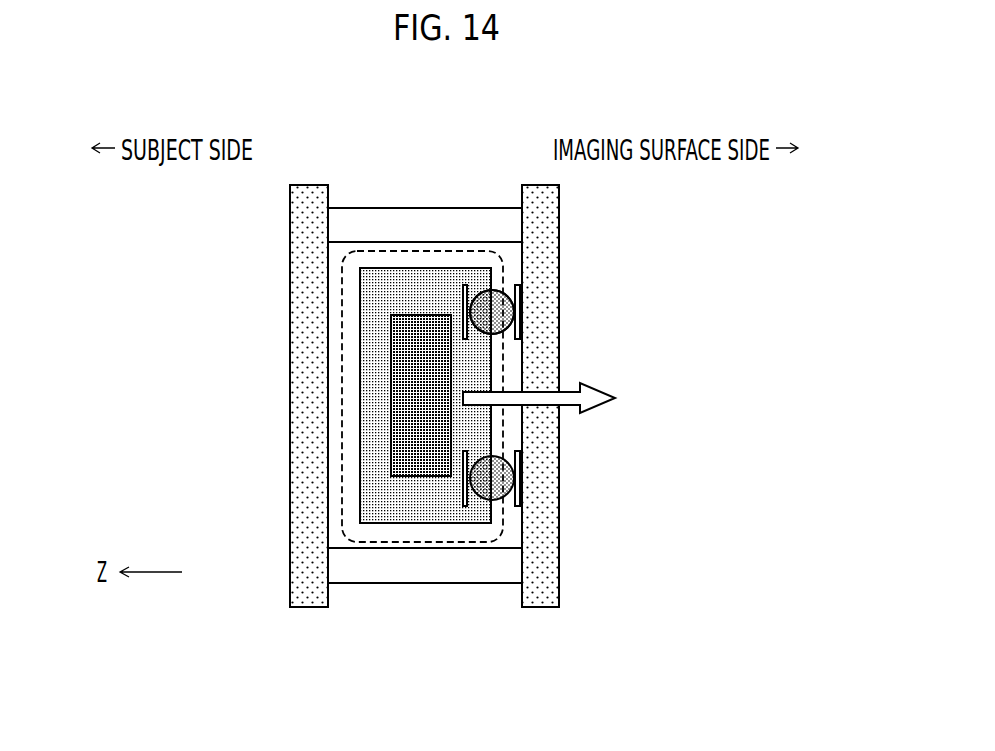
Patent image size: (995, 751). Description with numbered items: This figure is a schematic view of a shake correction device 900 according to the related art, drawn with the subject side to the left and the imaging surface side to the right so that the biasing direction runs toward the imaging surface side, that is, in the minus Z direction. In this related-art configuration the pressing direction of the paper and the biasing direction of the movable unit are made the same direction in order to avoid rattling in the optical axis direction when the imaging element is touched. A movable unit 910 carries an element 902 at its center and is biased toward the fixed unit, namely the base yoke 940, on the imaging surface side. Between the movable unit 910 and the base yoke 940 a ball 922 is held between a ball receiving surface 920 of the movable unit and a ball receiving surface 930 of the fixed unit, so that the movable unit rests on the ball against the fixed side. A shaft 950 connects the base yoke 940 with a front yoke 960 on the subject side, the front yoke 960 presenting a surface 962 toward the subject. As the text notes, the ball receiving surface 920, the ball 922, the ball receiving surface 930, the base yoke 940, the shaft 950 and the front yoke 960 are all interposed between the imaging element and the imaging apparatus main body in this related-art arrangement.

The shake correction device 900 is at (576, 113).
The image sensor 902 is at (391, 395).
The movable unit 910 is at (343, 327).
The ball receiving surface of movable unit 920 is at (463, 285).
The ball 922 is at (490, 290).
The ball receiving surface of fixed unit 930 is at (515, 492).
The base yoke 940 is at (555, 207).
The shaft 950 is at (401, 213).
The front yoke 960 is at (300, 205).
The subject-side surface 962 is at (290, 455).